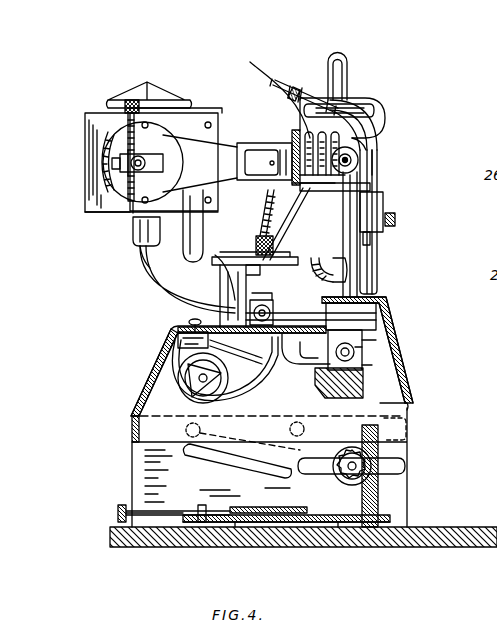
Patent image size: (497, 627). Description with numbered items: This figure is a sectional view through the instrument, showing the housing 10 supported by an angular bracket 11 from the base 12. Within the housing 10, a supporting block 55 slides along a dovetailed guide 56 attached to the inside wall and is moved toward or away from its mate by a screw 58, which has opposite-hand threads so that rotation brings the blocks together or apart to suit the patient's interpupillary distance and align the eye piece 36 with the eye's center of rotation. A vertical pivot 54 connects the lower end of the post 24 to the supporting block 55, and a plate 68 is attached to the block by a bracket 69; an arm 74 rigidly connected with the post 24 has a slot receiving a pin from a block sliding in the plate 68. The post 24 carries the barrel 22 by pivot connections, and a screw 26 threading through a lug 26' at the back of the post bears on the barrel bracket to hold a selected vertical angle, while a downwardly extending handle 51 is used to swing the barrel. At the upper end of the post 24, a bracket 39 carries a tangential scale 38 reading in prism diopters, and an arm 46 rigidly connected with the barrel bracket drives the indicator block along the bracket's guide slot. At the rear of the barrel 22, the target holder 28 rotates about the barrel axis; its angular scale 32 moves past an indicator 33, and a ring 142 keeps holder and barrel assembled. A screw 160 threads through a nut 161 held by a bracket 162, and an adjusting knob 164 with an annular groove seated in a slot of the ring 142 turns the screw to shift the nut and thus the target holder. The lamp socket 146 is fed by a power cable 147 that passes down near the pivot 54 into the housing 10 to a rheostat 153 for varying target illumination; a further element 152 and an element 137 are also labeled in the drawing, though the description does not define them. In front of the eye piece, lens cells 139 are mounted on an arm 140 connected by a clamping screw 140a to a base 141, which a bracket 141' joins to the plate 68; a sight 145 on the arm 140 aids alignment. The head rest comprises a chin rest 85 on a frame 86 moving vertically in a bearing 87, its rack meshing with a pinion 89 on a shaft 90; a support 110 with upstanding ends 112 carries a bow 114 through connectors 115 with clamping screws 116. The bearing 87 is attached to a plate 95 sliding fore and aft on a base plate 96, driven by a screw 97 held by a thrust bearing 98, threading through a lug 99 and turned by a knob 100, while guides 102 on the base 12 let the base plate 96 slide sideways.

The housing 10 is at (136, 395).
The angular bracket 11 is at (132, 463).
The base 12 is at (447, 528).
The barrel 22 is at (218, 184).
The post 24 is at (362, 266).
The screw 26 is at (253, 243).
The lug 26' is at (256, 213).
The target holder 28 is at (105, 227).
The angular scale 32 is at (103, 160).
The indicator 33 is at (107, 173).
The eye piece 36 is at (271, 134).
The scale 38 is at (375, 103).
The bracket 39 is at (377, 124).
The arm 46 is at (348, 73).
The handle 51 is at (200, 234).
The pivot 54 is at (378, 345).
The supporting block 55 is at (356, 350).
The dovetailed guide 56 is at (362, 368).
The screw 58 is at (335, 356).
The plate 68 is at (218, 298).
The bracket 69 is at (300, 350).
The arm 74 is at (290, 313).
The chin rest 85 is at (325, 258).
The frame 86 is at (376, 322).
The bearing 87 is at (380, 452).
The pinion 89 is at (348, 473).
The shaft 90 is at (340, 456).
The plate 95 is at (353, 513).
The base plate 96 is at (297, 527).
The screw 97 is at (163, 508).
The thrust bearing 98 is at (203, 508).
The lug 99 is at (268, 508).
The knob 100 is at (118, 513).
The guide 102 is at (235, 525).
The support 110 is at (378, 274).
The upstanding end 112 is at (382, 236).
The bow 114 is at (373, 156).
The connector 115 is at (376, 205).
The clamping screw 116 is at (397, 220).
The cylinder 137 is at (300, 145).
The lens cell 139 is at (274, 92).
The arm 140 is at (302, 220).
The clamping screw 140a is at (213, 255).
The base 141 is at (267, 255).
The bracket 141' is at (253, 296).
The ring 142 is at (211, 126).
The sight 145 is at (158, 101).
The lamp socket 146 is at (140, 242).
The power cable 147 is at (162, 285).
The knob 152 is at (160, 163).
The rheostat 153 is at (218, 385).
The screw 160 is at (128, 140).
The nut 161 is at (133, 180).
The bracket 162 is at (147, 172).
The adjusting knob 164 is at (128, 105).